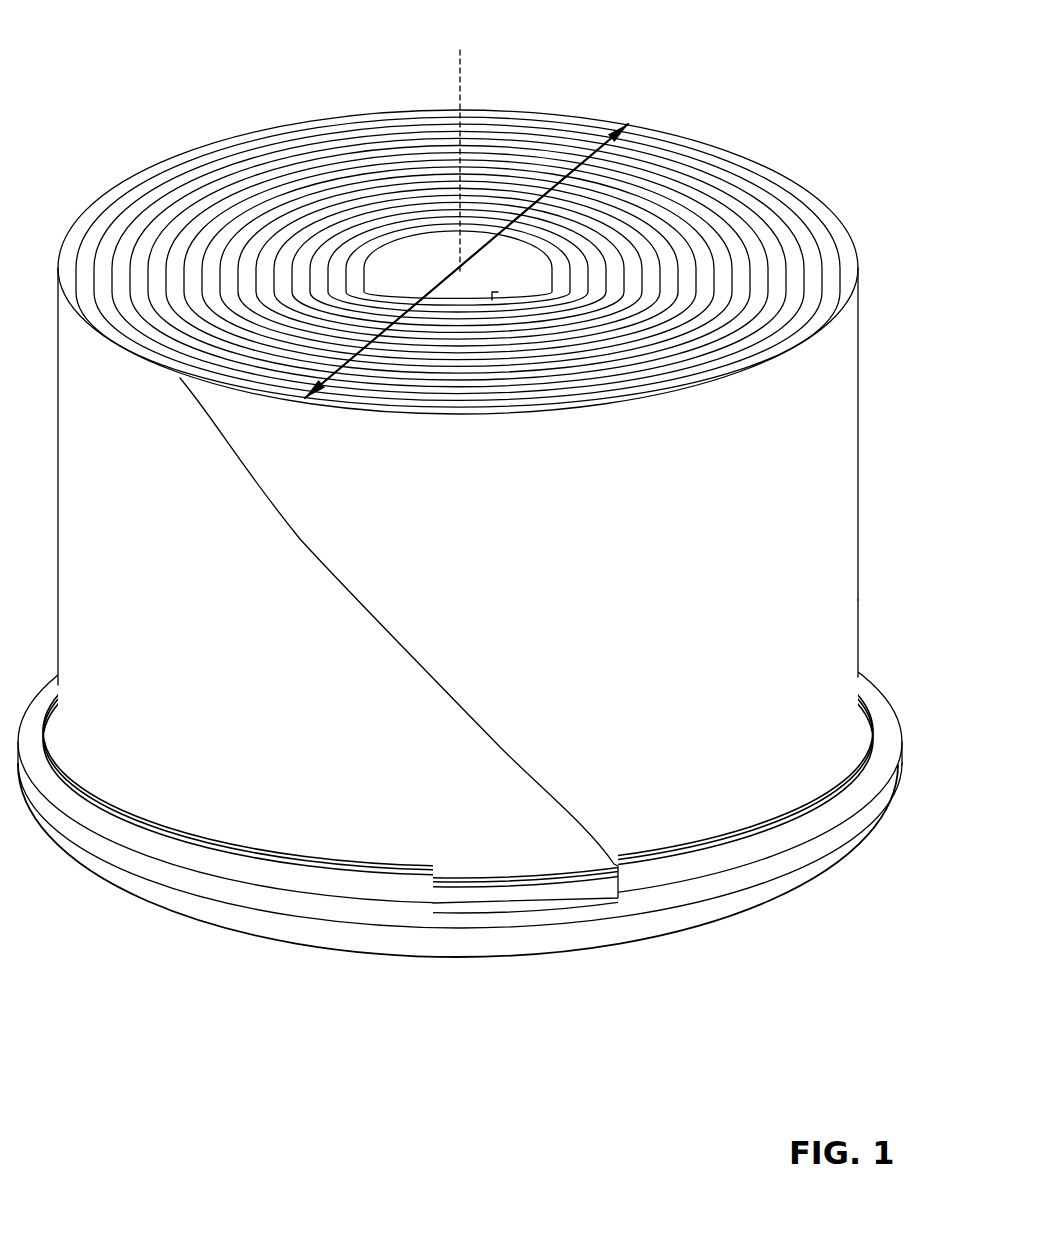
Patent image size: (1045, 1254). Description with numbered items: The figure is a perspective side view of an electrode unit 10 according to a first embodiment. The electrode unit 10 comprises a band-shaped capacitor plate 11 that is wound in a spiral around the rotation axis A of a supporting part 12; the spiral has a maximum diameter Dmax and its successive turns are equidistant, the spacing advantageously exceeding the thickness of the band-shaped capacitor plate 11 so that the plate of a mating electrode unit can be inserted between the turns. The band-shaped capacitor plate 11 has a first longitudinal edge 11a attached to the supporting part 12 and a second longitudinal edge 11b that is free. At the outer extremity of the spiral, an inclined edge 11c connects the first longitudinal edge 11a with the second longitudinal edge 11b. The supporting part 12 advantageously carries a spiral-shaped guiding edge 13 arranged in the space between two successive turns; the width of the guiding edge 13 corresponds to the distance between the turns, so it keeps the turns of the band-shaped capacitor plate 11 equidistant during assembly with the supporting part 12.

The electrode unit 10 is at (750, 88).
The band-shaped capacitor plate 11 is at (848, 530).
The first longitudinal edge 11a is at (855, 744).
The second longitudinal edge 11b is at (857, 293).
The inclined edge 11c is at (521, 768).
The supporting part 12 is at (260, 925).
The spiral-shaped guiding edge 13 is at (743, 849).